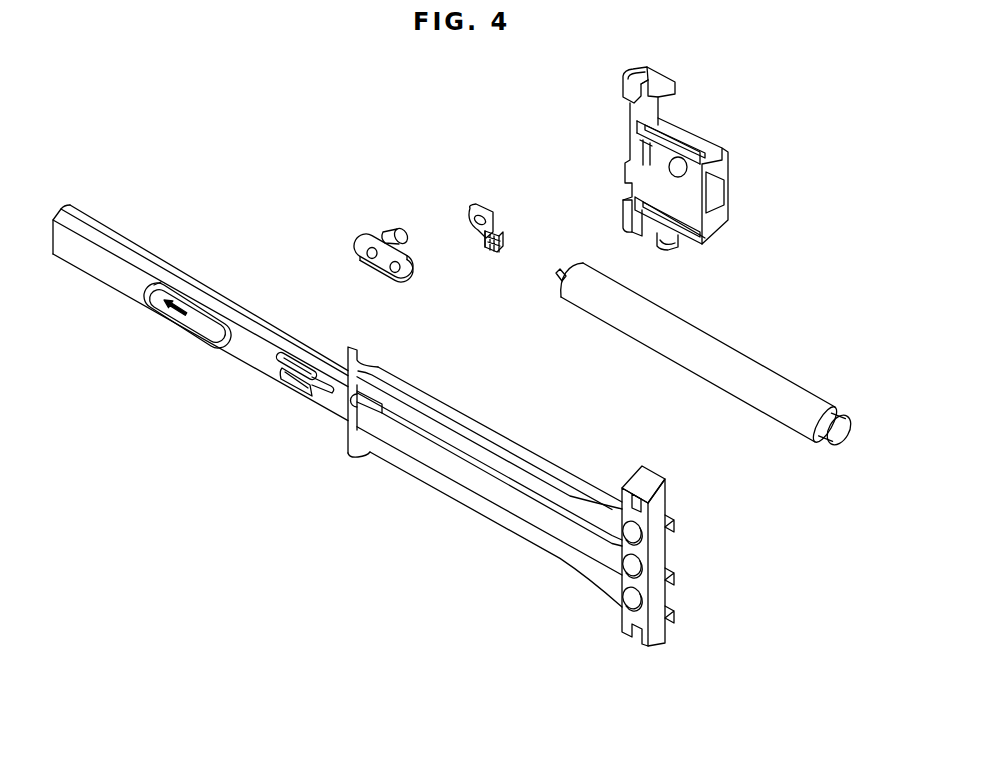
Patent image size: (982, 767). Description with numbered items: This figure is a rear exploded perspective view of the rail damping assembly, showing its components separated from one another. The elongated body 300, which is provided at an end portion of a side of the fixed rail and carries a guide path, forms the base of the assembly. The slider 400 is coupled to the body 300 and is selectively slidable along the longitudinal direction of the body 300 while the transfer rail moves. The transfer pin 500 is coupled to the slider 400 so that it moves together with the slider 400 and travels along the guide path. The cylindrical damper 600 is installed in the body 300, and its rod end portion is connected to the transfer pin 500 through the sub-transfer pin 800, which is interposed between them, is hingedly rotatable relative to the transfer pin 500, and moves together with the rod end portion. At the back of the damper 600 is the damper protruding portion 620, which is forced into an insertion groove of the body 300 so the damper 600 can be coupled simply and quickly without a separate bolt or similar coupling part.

The body 300 is at (487, 511).
The slider 400 is at (693, 140).
The transfer pin 500 is at (388, 211).
The damper 600 is at (717, 350).
The damper protruding portion 620 is at (843, 446).
The sub-transfer pin 800 is at (497, 183).